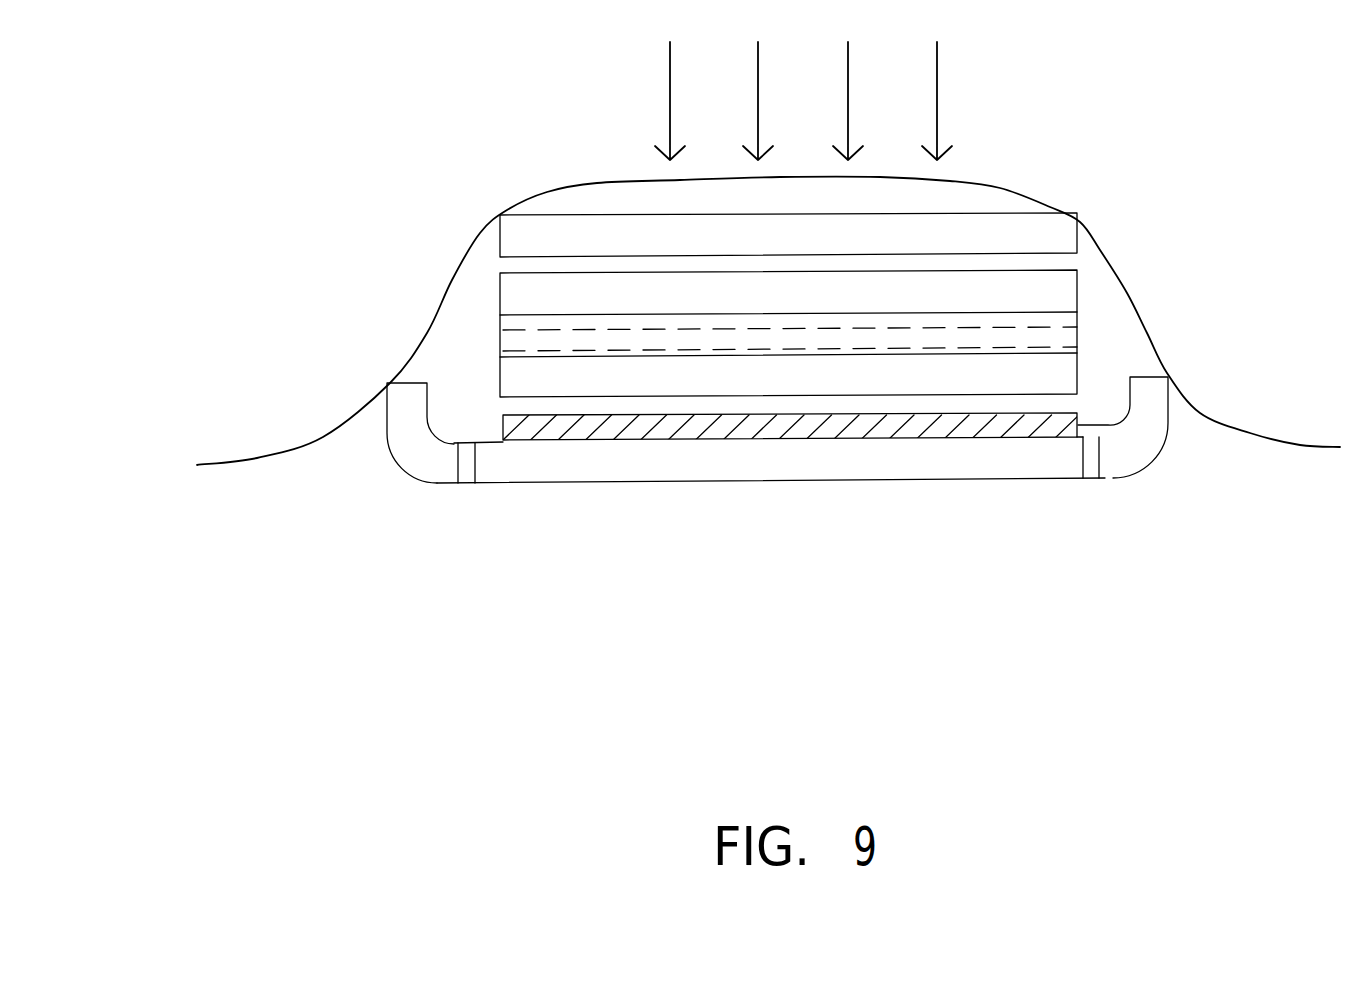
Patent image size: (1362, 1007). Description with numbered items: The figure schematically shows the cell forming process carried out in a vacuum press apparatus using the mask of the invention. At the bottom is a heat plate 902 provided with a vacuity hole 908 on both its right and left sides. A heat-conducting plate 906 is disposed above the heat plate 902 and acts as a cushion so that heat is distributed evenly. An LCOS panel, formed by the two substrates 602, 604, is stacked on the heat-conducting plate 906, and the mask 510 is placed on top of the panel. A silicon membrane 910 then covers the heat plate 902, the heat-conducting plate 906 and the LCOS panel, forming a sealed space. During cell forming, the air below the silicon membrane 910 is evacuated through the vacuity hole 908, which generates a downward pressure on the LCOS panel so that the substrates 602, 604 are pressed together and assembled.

The mask 510 is at (1078, 230).
The substrate 602 is at (1078, 287).
The substrate 604 is at (1080, 370).
The heat plate 902 is at (892, 460).
The heat-conducting plate 906 is at (1120, 427).
The vacuity hole 908 is at (475, 498).
The silicon membrane 910 is at (322, 422).